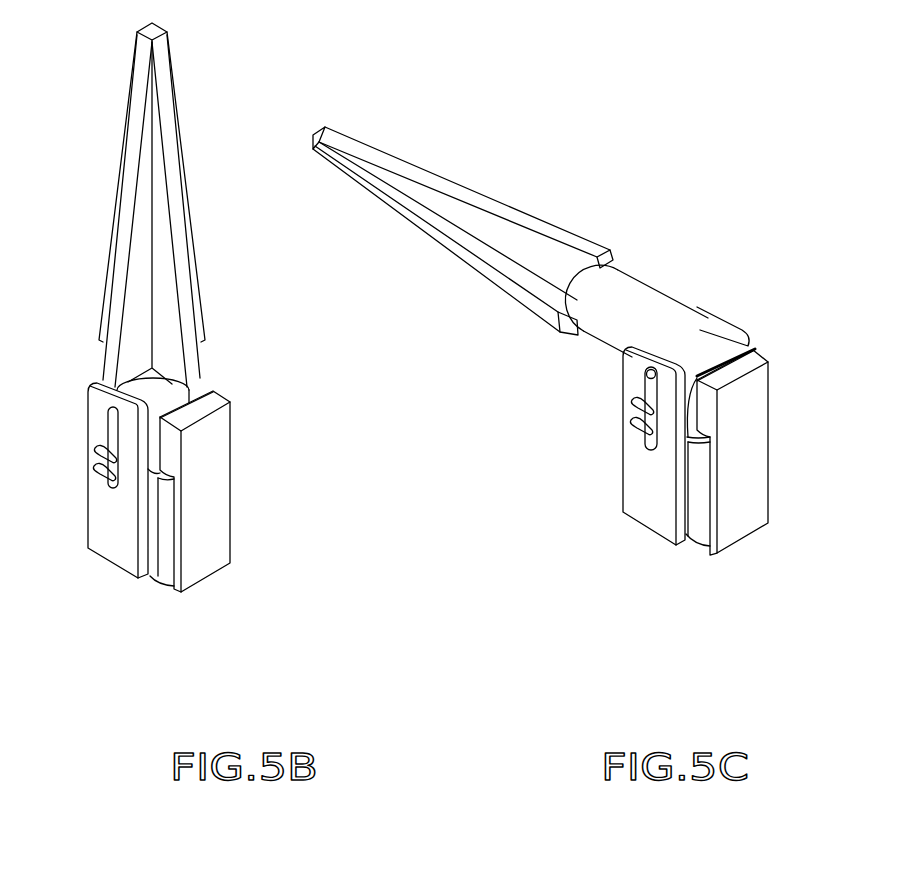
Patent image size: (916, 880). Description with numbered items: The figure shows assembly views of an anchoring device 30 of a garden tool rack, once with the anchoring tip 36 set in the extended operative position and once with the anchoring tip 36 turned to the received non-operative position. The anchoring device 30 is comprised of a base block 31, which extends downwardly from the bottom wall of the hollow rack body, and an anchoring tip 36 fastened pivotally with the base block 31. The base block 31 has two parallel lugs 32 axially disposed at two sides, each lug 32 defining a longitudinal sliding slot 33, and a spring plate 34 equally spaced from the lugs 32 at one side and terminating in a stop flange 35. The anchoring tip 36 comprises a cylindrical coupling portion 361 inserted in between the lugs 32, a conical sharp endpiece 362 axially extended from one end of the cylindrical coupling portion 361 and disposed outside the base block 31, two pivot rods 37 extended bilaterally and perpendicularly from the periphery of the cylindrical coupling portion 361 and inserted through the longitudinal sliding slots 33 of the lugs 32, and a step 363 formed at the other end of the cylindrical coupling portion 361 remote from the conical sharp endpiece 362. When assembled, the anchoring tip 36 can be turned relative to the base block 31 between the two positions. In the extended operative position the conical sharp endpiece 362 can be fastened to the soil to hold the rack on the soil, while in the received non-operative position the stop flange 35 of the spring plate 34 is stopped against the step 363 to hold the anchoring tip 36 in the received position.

In FIG. 5B, the anchoring device 30 is at (0, 100).
In FIG. 5C, the anchoring device 30 is at (815, 80).
In FIG. 5B, the base block 31 is at (162, 570).
In FIG. 5C, the base block 31 is at (702, 530).
In FIG. 5B, the lug 32 is at (100, 398).
In FIG. 5C, the lug 32 is at (633, 362).
In FIG. 5B, the longitudinal sliding slot 33 is at (110, 421).
In FIG. 5C, the longitudinal sliding slot 33 is at (640, 412).
In FIG. 5B, the spring plate 34 is at (215, 505).
In FIG. 5C, the spring plate 34 is at (752, 474).
In FIG. 5B, the stop flange 35 is at (175, 442).
In FIG. 5C, the stop flange 35 is at (708, 400).
In FIG. 5B, the anchoring tip 36 is at (106, 100).
In FIG. 5C, the anchoring tip 36 is at (568, 282).
In FIG. 5B, the cylindrical coupling portion 361 is at (175, 400).
In FIG. 5C, the cylindrical coupling portion 361 is at (648, 298).
In FIG. 5B, the conical sharp endpiece 362 is at (128, 187).
In FIG. 5C, the conical sharp endpiece 362 is at (484, 201).
In FIG. 5C, the step 363 is at (737, 348).
In FIG. 5B, the pivot rod 37 is at (98, 482).
In FIG. 5C, the pivot rod 37 is at (648, 376).